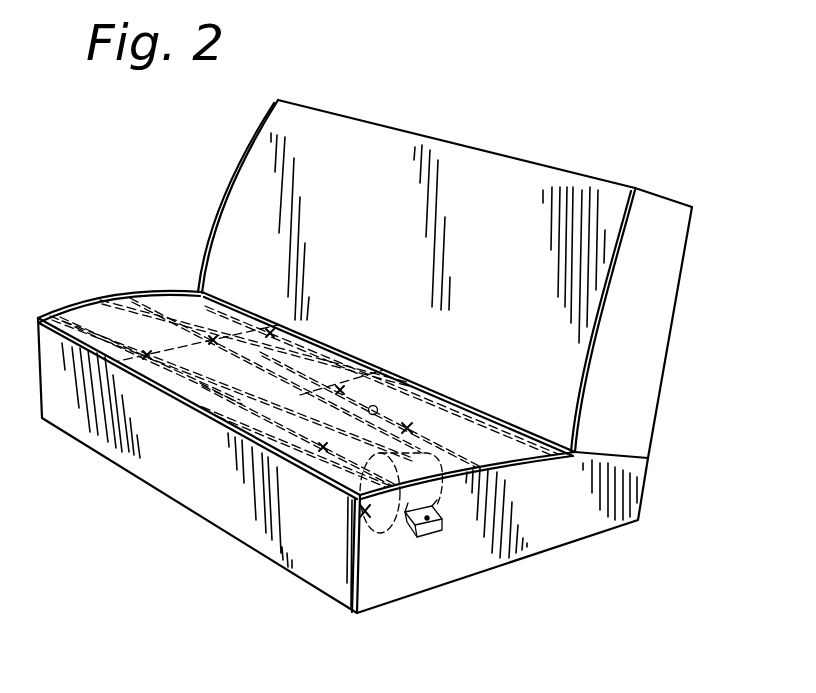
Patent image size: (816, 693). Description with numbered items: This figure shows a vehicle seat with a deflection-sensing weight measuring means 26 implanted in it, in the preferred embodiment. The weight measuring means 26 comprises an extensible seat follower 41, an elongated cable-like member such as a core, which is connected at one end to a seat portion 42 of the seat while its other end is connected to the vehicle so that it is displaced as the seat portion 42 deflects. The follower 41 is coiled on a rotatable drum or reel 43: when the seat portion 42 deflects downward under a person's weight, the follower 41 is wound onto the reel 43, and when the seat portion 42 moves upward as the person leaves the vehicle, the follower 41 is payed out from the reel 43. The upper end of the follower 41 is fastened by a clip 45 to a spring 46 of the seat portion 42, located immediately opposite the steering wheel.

The weight measuring means 26 is at (407, 553).
The extensible seat follower 41 is at (410, 427).
The seat portion 42 is at (498, 402).
The rotatable drum or reel 43 is at (362, 512).
The clip 45 is at (377, 406).
The spring 46 is at (345, 397).